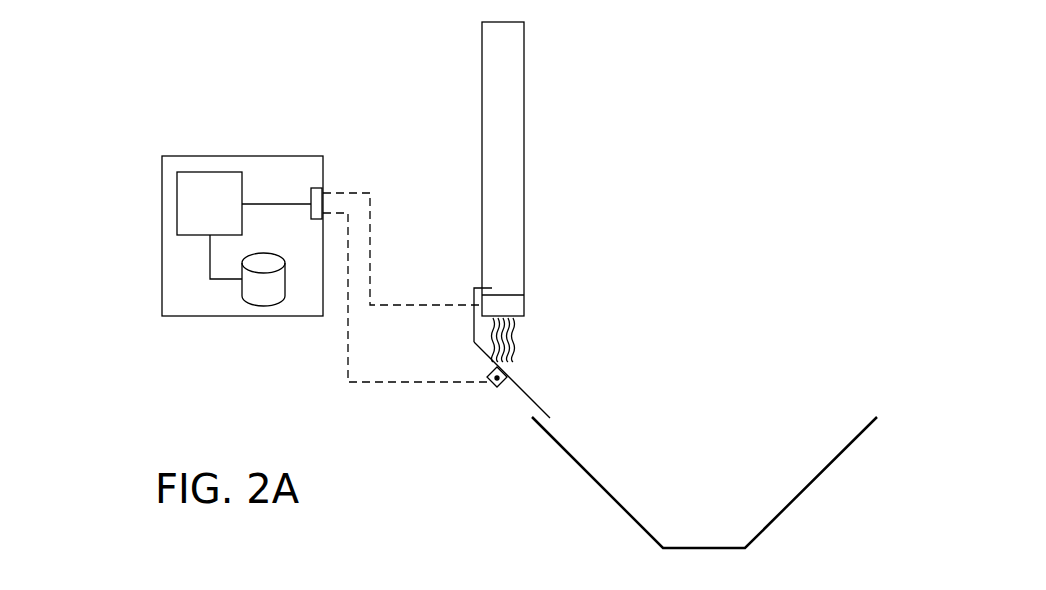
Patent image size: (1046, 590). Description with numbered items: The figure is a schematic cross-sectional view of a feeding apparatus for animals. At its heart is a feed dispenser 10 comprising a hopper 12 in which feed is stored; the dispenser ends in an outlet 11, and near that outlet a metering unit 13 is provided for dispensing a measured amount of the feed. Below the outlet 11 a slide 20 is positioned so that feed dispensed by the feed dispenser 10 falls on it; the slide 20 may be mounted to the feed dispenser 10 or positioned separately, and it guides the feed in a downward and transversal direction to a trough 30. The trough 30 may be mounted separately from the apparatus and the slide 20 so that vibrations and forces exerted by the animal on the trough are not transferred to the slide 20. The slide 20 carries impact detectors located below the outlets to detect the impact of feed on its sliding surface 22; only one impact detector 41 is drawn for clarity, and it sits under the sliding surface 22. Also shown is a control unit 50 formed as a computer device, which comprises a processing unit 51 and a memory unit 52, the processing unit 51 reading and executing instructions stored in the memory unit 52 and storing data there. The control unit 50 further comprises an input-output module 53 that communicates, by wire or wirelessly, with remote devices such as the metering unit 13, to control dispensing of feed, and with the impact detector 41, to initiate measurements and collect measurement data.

The feed dispenser 10 is at (537, 123).
The outlet 11 is at (517, 315).
The hopper 12 is at (524, 235).
The metering unit 13 is at (517, 305).
The slide 20 is at (474, 342).
The sliding surface 22 is at (522, 390).
The trough 30 is at (598, 483).
The impact detector 41 is at (504, 386).
The control unit 50 is at (162, 236).
The processing unit 51 is at (208, 174).
The memory unit 52 is at (263, 304).
The input-output module 53 is at (312, 204).